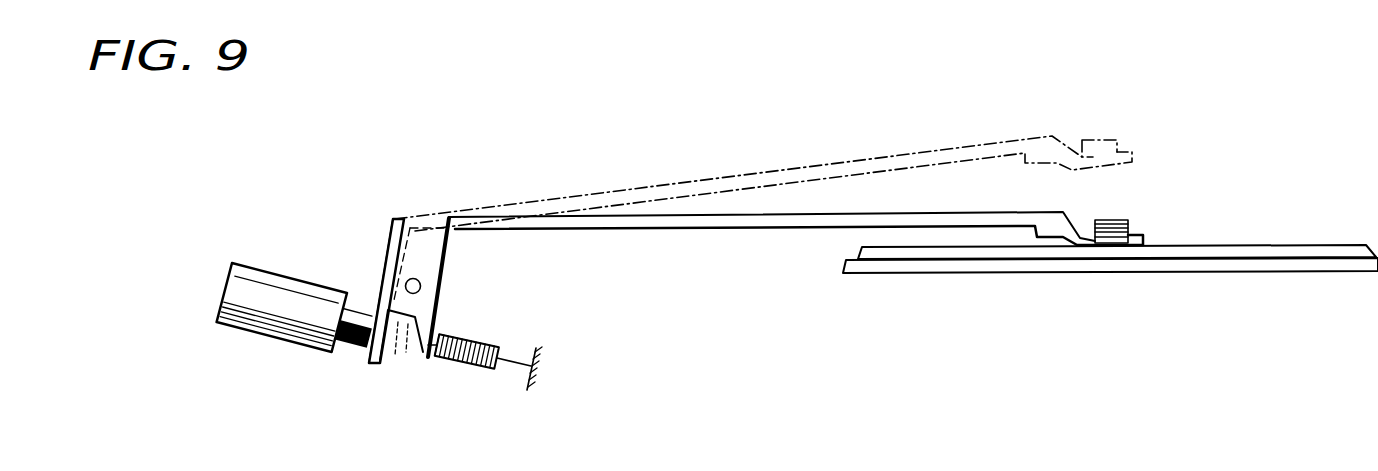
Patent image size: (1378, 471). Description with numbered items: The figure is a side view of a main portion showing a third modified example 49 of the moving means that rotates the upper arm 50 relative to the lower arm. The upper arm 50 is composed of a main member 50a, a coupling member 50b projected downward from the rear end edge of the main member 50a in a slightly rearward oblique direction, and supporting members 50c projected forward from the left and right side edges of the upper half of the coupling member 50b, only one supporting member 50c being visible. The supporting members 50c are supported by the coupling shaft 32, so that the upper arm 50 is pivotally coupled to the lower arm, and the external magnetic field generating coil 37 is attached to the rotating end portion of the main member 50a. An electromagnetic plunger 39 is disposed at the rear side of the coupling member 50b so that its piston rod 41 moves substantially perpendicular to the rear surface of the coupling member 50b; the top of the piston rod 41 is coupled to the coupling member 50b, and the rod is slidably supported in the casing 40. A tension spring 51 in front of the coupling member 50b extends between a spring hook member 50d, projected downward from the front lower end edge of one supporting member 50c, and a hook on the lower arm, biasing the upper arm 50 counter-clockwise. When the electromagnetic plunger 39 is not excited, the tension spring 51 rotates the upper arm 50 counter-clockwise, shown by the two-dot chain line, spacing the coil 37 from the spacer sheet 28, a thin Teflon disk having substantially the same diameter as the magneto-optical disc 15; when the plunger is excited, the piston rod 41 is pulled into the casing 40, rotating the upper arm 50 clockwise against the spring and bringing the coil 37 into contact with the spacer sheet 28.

The magneto-optical disc 15 is at (1358, 275).
The spacer sheet 28 is at (1348, 245).
The coupling shaft 32 is at (421, 288).
The external magnetic field generating coil 37 is at (1122, 140).
The electromagnetic plunger 39 is at (290, 343).
The casing 40 is at (255, 334).
The piston rod 41 is at (345, 350).
The third modified example 49 is at (374, 195).
The upper arm 50 is at (738, 218).
The main member 50a is at (801, 170).
The coupling member 50b is at (392, 229).
The supporting member 50c is at (439, 258).
The spring hook member 50d is at (434, 329).
The tension spring 51 is at (470, 366).